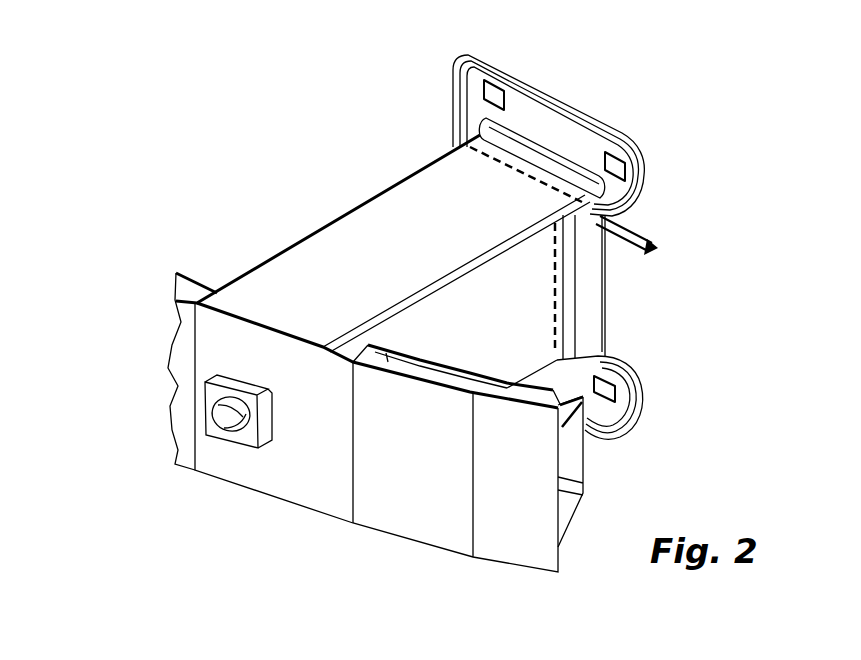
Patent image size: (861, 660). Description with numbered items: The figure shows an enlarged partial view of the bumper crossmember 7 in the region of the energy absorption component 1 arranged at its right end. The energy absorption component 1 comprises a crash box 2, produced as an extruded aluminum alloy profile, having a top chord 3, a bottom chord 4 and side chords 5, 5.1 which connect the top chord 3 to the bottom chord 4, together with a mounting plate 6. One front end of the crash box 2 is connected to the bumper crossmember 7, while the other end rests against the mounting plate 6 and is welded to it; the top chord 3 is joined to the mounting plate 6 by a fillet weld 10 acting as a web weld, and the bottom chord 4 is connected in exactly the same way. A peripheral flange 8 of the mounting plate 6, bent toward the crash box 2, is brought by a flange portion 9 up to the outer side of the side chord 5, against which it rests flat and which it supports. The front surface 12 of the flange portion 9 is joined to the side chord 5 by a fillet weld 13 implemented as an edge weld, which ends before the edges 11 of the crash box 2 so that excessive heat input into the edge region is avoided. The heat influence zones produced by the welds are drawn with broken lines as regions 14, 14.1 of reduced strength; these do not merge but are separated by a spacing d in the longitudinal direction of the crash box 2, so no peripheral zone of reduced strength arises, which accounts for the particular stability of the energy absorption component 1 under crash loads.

The energy absorption component 1 is at (322, 201).
The crash box 2 is at (312, 266).
The top chord 3 is at (418, 247).
The bottom chord 4 is at (634, 409).
The side chord 5 is at (498, 337).
The side chord 5.1 is at (229, 281).
The mounting plate 6 is at (579, 143).
The bumper crossmember 7 is at (162, 296).
The flange 8 is at (538, 117).
The flange portion 9 is at (594, 272).
The fillet weld 10 is at (542, 156).
The edges 11 is at (559, 199).
The front surface 12 is at (576, 333).
The fillet weld 13 is at (571, 308).
The region having reduced strength 14 is at (561, 280).
The region having reduced strength 14.1 is at (451, 121).
The spacing d is at (631, 244).